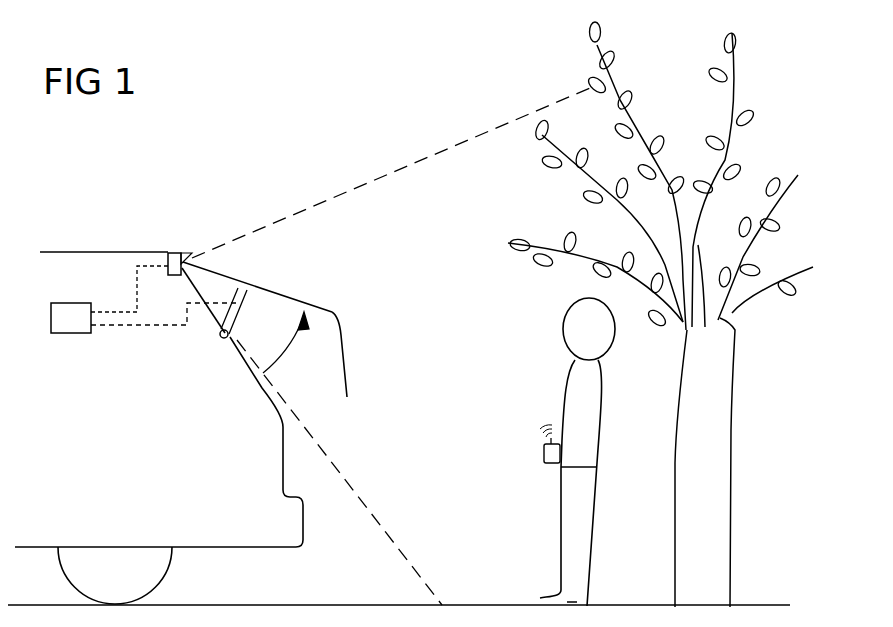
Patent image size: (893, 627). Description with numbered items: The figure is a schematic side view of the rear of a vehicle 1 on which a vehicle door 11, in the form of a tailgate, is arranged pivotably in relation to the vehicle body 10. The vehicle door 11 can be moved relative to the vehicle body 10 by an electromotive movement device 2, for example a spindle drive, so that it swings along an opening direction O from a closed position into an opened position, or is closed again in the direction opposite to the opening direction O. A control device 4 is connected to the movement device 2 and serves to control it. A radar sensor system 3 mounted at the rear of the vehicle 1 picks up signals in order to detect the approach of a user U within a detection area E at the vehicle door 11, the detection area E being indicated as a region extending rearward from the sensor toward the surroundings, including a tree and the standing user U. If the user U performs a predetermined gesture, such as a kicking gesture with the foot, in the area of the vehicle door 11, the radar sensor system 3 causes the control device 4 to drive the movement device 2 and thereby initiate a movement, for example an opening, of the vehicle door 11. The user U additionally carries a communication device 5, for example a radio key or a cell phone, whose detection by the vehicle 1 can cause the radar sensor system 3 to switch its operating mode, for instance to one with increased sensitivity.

The vehicle 1 is at (140, 250).
The vehicle body 10 is at (162, 250).
The radar sensor system 3 is at (183, 252).
The vehicle door 11 is at (282, 300).
The electromotive movement device 2 is at (219, 331).
The control device 4 is at (69, 322).
The communication device 5 is at (544, 454).
The opening direction O is at (286, 342).
The detection area E is at (400, 221).
The user U is at (546, 511).